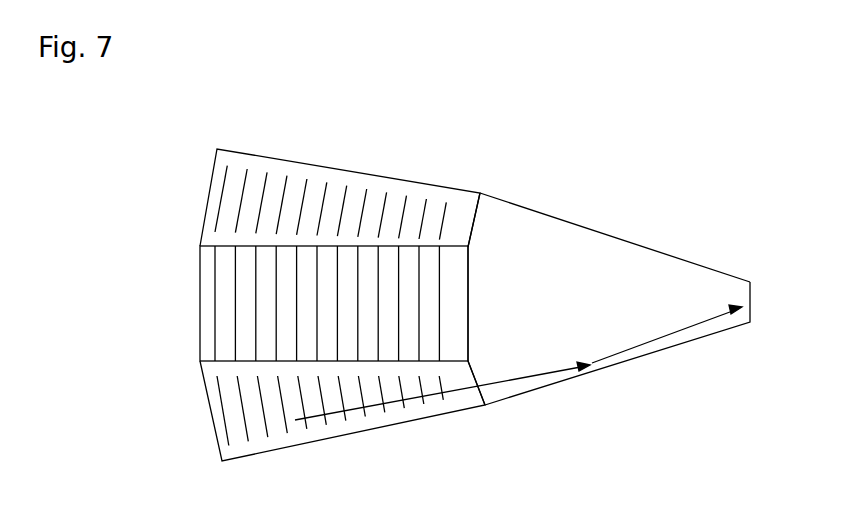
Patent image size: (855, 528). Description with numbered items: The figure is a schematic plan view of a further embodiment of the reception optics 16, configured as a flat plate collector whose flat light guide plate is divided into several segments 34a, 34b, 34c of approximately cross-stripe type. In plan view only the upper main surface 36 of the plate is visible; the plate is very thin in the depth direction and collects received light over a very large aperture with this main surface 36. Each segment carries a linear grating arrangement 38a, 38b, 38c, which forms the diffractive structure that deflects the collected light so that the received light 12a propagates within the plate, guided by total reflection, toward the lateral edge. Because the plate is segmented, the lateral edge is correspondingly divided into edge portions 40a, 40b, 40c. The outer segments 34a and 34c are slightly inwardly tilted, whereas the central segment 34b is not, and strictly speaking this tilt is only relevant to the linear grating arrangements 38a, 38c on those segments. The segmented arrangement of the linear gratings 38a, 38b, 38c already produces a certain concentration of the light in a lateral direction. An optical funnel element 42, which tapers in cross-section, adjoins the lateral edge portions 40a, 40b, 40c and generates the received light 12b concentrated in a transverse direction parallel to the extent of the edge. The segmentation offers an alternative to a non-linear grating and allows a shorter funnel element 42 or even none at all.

The received light 12a is at (463, 389).
The received light 12b is at (657, 336).
The reception optics 16 is at (657, 198).
The segment 34a is at (212, 172).
The central segment 34b is at (200, 283).
The segment 34c is at (207, 388).
The upper main surface 36 is at (435, 197).
The linear grating arrangement 38a is at (260, 210).
The linear grating arrangement 38b is at (255, 343).
The linear grating arrangement 38c is at (240, 420).
The lateral edge 40a is at (476, 222).
The lateral edge 40b is at (468, 302).
The lateral edge 40c is at (471, 366).
The optical funnel element 42 is at (605, 250).